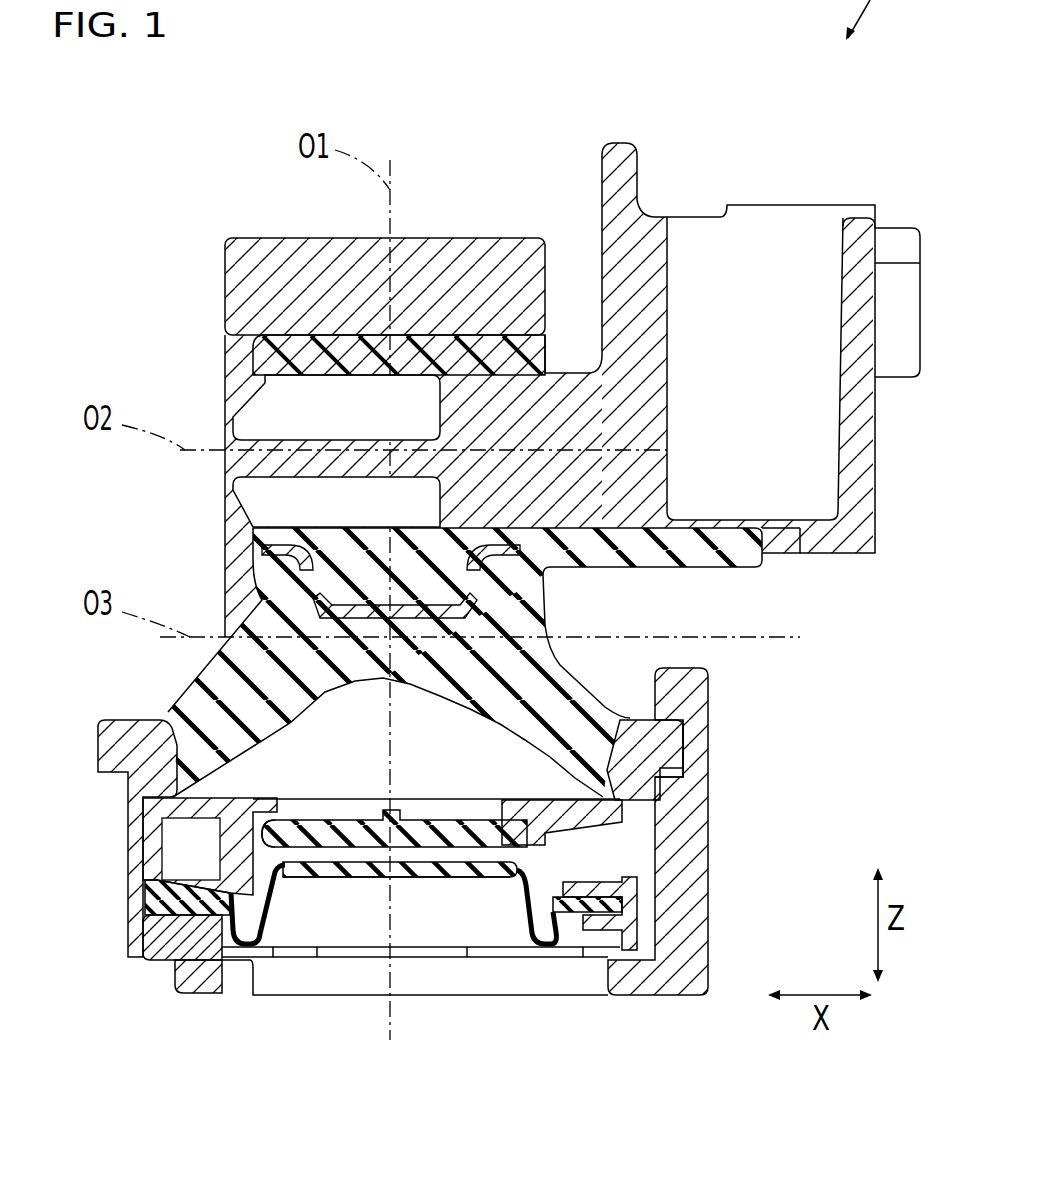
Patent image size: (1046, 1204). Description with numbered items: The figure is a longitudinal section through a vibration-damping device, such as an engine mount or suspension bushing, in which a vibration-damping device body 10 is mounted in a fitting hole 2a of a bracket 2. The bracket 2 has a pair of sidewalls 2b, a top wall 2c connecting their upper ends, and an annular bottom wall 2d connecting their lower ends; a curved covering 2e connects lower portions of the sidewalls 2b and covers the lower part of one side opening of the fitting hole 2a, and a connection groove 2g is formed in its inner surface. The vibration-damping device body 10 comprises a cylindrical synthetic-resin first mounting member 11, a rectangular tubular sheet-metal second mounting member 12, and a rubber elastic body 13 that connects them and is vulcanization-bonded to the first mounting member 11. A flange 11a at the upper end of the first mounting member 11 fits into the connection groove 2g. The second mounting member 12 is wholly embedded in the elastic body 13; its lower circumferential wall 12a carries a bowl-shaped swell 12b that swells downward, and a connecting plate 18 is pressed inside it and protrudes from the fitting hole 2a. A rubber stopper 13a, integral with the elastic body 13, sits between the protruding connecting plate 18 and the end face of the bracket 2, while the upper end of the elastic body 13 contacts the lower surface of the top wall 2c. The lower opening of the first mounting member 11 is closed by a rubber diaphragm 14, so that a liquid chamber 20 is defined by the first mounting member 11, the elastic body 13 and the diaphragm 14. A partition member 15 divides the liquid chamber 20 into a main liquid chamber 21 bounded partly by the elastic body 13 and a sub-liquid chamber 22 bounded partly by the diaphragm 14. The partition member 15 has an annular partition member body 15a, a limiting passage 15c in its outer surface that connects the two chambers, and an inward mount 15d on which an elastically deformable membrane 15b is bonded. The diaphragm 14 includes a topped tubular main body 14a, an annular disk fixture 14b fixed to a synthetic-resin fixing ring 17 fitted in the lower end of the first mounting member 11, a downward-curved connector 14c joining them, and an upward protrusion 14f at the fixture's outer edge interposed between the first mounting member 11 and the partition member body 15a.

The bracket 2 is at (464, 599).
The fitting hole 2a is at (100, 860).
The sidewalls 2b is at (235, 375).
The top wall 2c is at (238, 278).
The bottom wall 2d is at (198, 983).
The covering 2e is at (695, 800).
The connection groove 2g is at (685, 735).
The vibration-damping device body 10 is at (406, 727).
The first mounting member 11 is at (100, 775).
The flange 11a is at (670, 750).
The second mounting member 12 is at (445, 561).
The lower circumferential wall 12a is at (270, 550).
The swell 12b is at (313, 600).
The elastic body 13 is at (215, 682).
The rubber stopper 13a is at (260, 357).
The diaphragm 14 is at (323, 996).
The main body 14a is at (413, 880).
The fixture 14b is at (583, 913).
The connector 14c is at (537, 947).
The protrusion 14f is at (152, 898).
The partition member 15 is at (491, 939).
The partition member body 15a is at (613, 812).
The membrane 15b is at (605, 866).
The limiting passage 15c is at (215, 856).
The mount 15d is at (275, 835).
The fixing ring 17 is at (627, 952).
The connecting plate 18 is at (627, 173).
The liquid chamber 20 is at (378, 748).
The main liquid chamber 21 is at (253, 777).
The sub-liquid chamber 22 is at (260, 857).